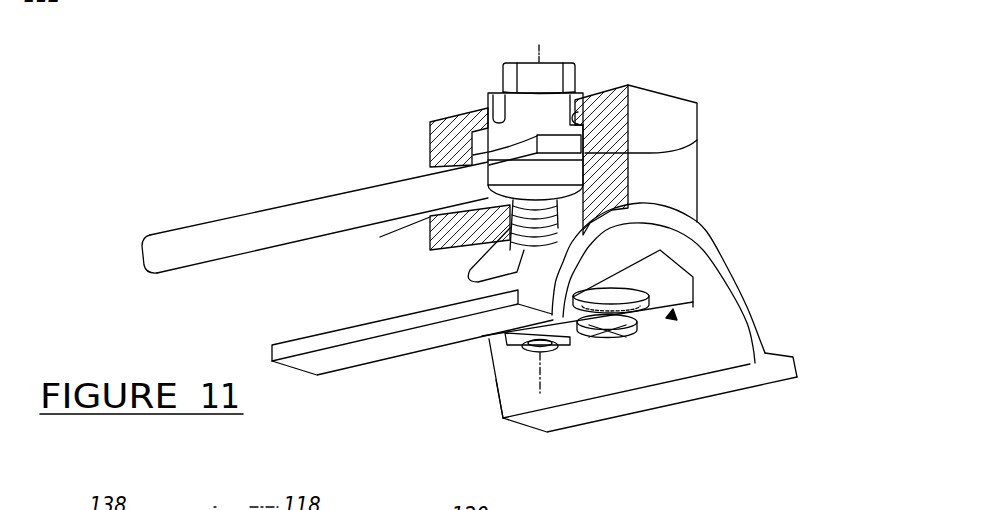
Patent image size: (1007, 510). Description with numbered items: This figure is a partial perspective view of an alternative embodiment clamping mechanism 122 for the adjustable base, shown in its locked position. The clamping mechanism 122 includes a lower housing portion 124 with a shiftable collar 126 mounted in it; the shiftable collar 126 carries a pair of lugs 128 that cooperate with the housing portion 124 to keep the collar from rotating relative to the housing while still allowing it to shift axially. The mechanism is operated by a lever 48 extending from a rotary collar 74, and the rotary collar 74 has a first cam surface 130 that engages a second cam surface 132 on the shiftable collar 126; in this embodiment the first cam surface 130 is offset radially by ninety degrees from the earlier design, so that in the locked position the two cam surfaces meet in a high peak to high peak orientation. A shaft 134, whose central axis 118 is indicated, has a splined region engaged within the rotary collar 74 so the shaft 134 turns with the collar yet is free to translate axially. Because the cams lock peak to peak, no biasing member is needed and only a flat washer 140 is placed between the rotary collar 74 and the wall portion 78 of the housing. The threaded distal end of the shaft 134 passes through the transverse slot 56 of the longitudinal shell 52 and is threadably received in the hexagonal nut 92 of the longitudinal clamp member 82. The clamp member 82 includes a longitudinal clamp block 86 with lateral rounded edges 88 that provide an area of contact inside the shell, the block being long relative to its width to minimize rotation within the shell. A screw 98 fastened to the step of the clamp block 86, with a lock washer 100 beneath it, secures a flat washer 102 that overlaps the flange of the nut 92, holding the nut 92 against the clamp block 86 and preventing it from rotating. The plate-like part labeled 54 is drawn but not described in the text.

The lever 48 is at (175, 232).
The longitudinal shell 52 is at (753, 304).
The base plate 54 is at (370, 293).
The transverse slot 56 is at (532, 222).
The rotary collar 74 is at (697, 198).
The wall portion 78 is at (435, 246).
The longitudinal clamp member 82 is at (673, 316).
The longitudinal clamp block 86 is at (657, 312).
The lateral rounded edges 88 is at (683, 260).
The hexagonal nut 92 is at (497, 381).
The screw 98 is at (607, 340).
The lock washer 100 is at (563, 317).
The flat washer 102 is at (656, 305).
The central axis 118 is at (538, 44).
The clamping mechanism 122 is at (690, 20).
The lower housing portion 124 is at (580, 177).
The shiftable collar 126 is at (553, 82).
The lugs 128 is at (498, 103).
The first cam surface 130 is at (697, 140).
The second cam surface 132 is at (611, 100).
The shaft 134 is at (432, 125).
The flat washer 140 is at (478, 172).